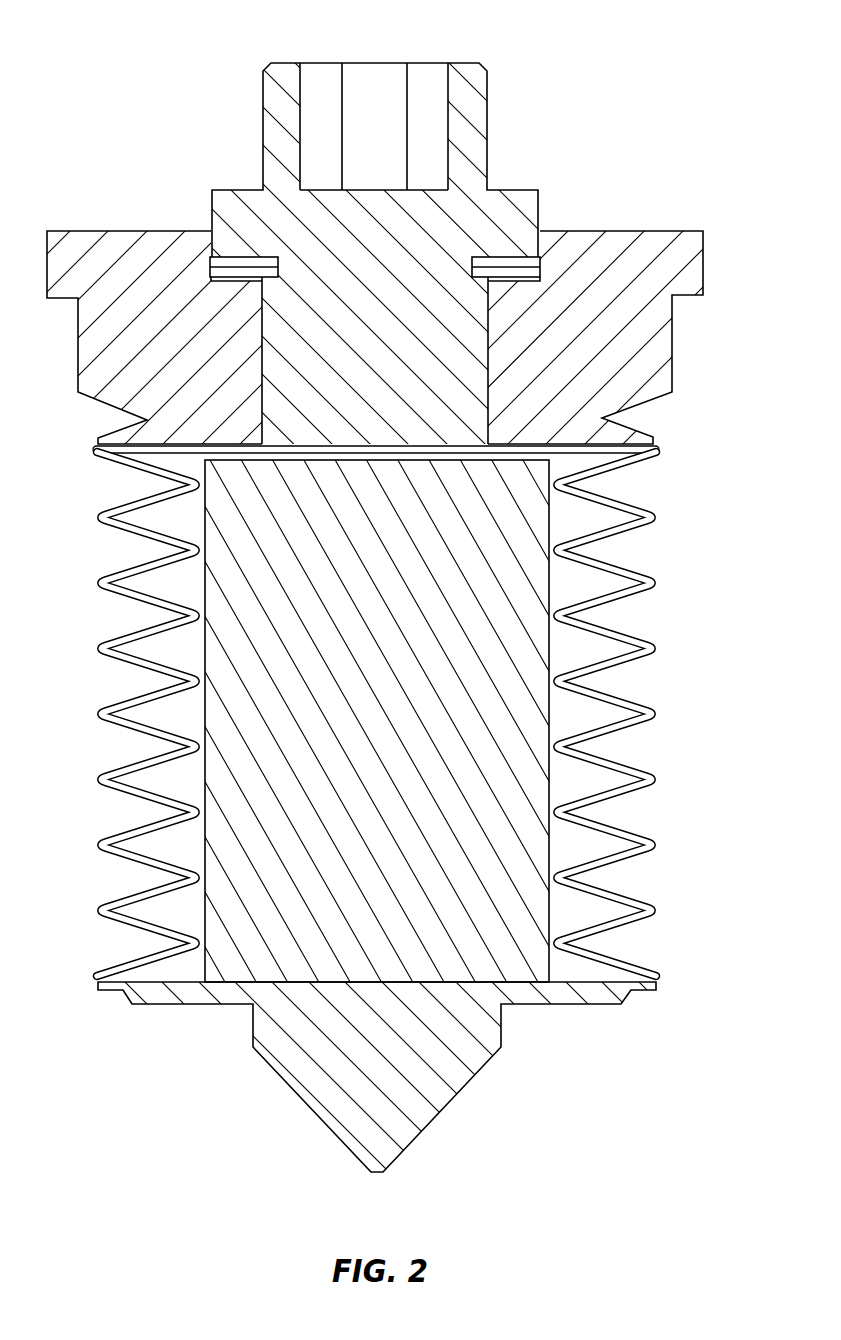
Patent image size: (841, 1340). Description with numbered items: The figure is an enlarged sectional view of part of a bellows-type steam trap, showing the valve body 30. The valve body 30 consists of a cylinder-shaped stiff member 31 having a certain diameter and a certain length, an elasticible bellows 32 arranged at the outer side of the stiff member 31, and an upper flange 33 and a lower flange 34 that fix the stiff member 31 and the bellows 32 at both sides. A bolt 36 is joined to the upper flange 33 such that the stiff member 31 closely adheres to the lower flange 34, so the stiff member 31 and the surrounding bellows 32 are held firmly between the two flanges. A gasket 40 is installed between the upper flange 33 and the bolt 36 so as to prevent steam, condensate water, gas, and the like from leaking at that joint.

The valve body 30 is at (363, 34).
The stiff member 31 is at (513, 730).
The bellows 32 is at (656, 715).
The upper flange 33 is at (646, 256).
The lower flange 34 is at (443, 1107).
The bolt 36 is at (517, 231).
The gasket 40 is at (227, 266).